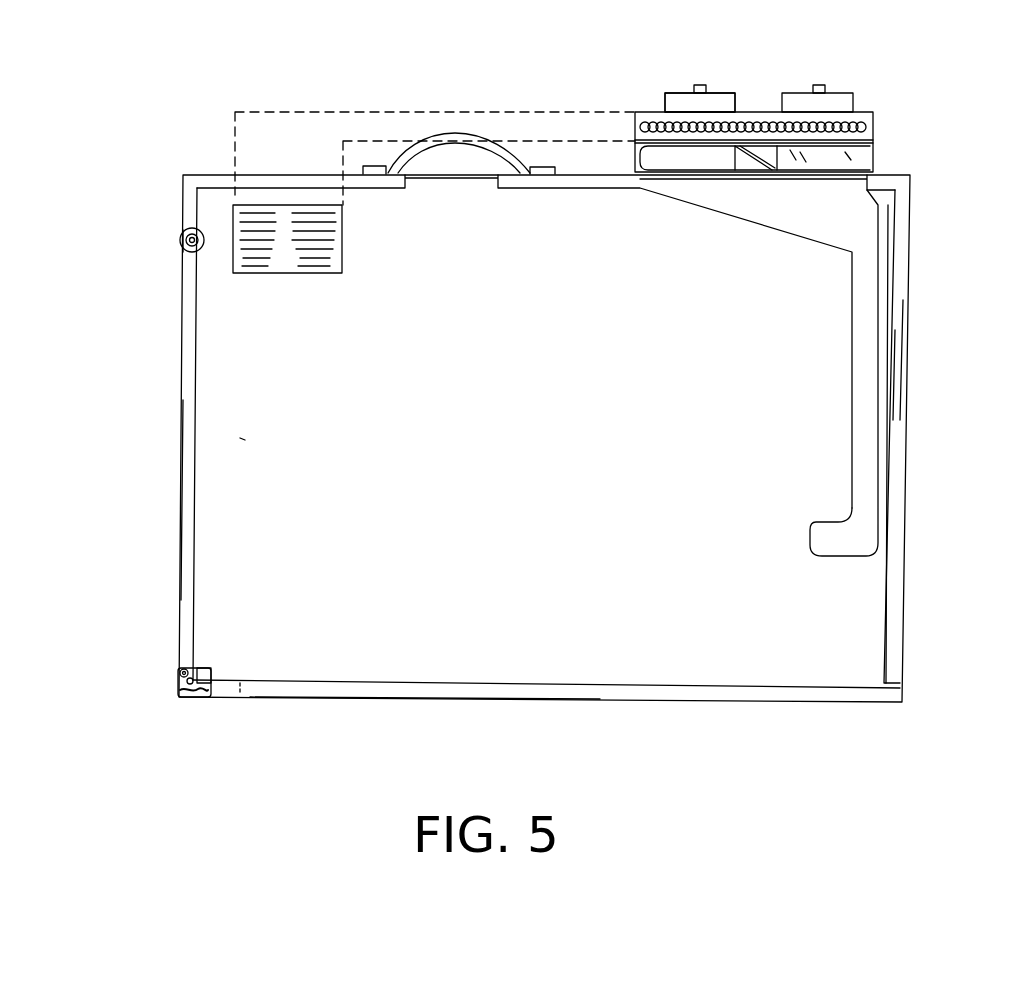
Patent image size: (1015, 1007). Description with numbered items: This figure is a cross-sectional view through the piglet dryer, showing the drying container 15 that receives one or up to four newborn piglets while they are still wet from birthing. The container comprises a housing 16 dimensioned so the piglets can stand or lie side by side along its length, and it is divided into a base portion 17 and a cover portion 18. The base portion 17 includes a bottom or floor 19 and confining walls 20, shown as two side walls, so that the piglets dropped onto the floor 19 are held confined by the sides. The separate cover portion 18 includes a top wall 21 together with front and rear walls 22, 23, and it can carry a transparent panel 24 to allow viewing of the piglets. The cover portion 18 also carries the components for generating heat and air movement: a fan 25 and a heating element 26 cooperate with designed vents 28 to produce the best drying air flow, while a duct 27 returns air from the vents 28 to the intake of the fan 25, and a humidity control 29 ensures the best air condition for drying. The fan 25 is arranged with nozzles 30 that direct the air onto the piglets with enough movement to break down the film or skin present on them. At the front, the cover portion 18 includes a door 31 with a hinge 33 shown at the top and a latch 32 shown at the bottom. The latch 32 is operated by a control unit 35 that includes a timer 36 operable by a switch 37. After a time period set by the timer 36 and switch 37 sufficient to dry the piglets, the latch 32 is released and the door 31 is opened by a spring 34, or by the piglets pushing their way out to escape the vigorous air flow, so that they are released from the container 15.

The drying container 15 is at (175, 160).
The housing 16 is at (897, 392).
The base portion 17 is at (617, 672).
The cover portion 18 is at (912, 351).
The bottom or floor 19 is at (520, 690).
The confining walls 20 is at (240, 438).
The top wall 21 is at (210, 183).
The front wall 22 is at (185, 213).
The rear wall 23 is at (903, 290).
The transparent panel 24 is at (455, 185).
The fan 25 is at (857, 157).
The heating element 26 is at (873, 118).
The duct 27 is at (393, 125).
The vents 28 is at (322, 263).
The humidity control 29 is at (603, 97).
The nozzles 30 is at (835, 535).
The door 31 is at (187, 520).
The latch 32 is at (178, 682).
The hinge 33 is at (180, 240).
The spring 34 is at (180, 252).
The control unit 35 is at (757, 110).
The timer 36 is at (700, 102).
The switch 37 is at (832, 100).